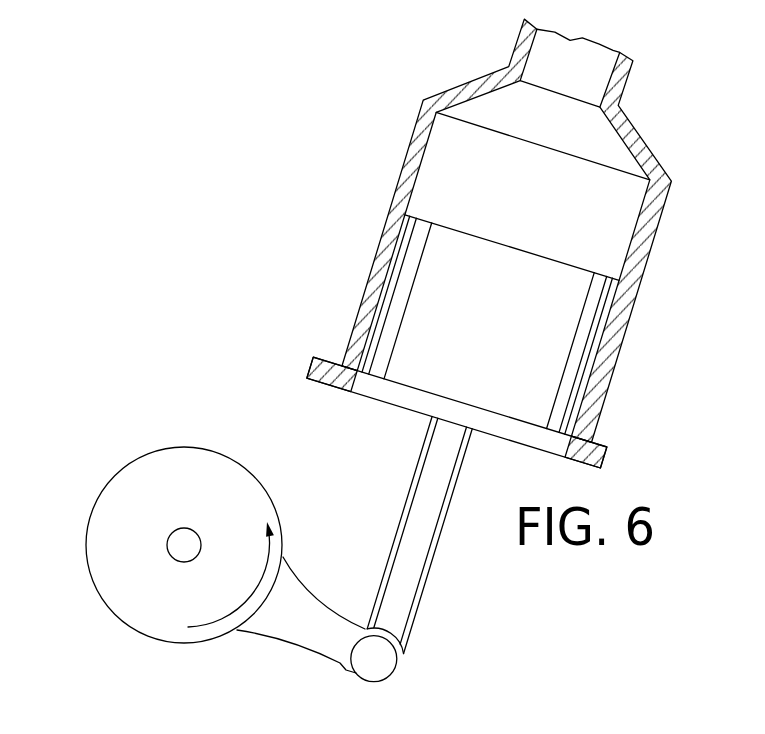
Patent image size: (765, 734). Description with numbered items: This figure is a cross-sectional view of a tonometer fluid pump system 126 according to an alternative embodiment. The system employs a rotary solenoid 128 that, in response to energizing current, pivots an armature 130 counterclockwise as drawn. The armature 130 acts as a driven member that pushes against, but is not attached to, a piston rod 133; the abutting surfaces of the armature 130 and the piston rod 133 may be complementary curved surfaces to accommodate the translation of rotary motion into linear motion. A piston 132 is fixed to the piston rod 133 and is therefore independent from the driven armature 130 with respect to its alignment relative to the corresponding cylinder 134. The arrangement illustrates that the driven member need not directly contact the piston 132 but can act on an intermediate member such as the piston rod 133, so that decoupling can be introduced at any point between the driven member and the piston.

The tonometer fluid pump system 126 is at (207, 252).
The rotary solenoid 128 is at (108, 583).
The armature 130 is at (313, 637).
The piston 132 is at (487, 343).
The piston rod 133 is at (417, 560).
The cylinder 134 is at (408, 157).